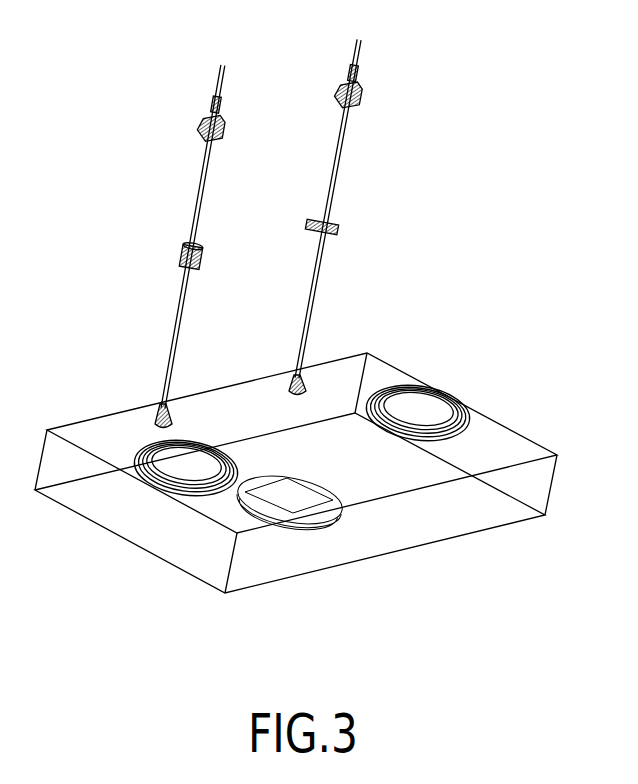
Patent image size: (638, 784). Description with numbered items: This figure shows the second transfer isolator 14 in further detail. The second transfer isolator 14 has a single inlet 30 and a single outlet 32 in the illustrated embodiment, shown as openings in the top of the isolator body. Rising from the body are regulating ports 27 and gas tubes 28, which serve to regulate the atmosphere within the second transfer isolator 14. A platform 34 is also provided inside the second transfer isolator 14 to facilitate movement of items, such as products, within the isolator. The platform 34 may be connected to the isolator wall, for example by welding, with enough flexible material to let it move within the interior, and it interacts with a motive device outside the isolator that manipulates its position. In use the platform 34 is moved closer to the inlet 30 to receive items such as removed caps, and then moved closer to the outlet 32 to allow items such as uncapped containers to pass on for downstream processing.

The second transfer isolator 14 is at (423, 273).
The regulating port 27 is at (157, 418).
The gas tube 28 is at (176, 268).
The inlet 30 is at (142, 448).
The outlet 32 is at (443, 393).
The platform 34 is at (300, 518).